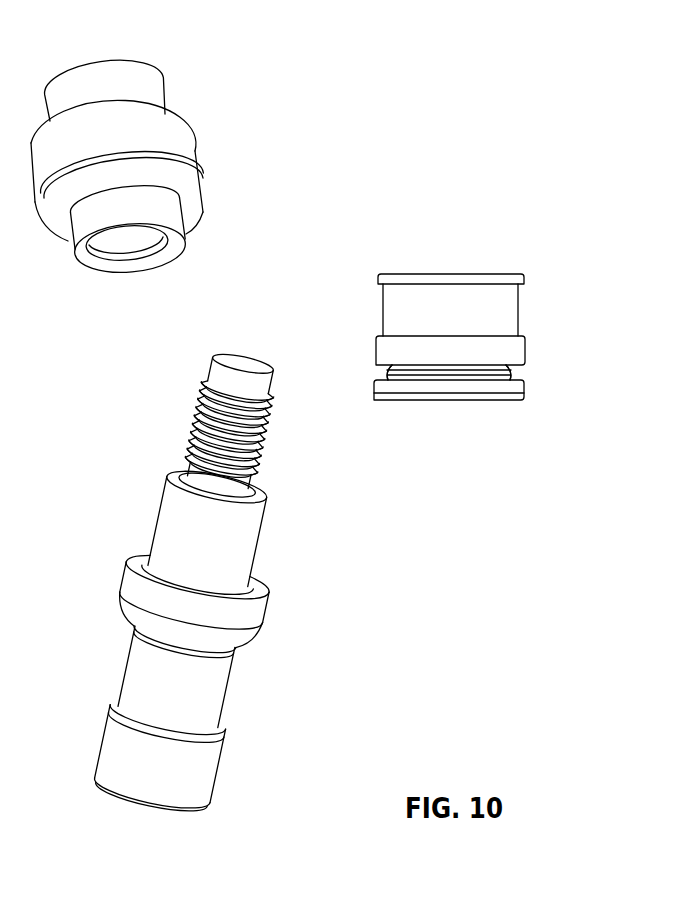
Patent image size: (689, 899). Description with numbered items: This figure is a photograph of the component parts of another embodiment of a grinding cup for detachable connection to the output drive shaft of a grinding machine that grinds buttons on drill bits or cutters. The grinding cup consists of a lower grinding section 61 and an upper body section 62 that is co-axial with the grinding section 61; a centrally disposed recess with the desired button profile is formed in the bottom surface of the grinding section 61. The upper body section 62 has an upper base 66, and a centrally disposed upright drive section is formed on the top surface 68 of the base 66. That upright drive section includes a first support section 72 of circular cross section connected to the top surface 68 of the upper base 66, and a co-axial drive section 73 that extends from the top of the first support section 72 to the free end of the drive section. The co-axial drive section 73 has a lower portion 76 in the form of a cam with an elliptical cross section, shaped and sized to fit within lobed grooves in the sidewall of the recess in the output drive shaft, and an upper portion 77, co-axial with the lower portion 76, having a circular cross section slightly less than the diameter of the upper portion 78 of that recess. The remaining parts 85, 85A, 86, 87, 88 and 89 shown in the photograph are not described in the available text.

The lower grinding section 61 is at (205, 777).
The upper body section 62 is at (215, 686).
The upper base 66 is at (138, 590).
The top surface 68 is at (262, 592).
The first support section 72 is at (203, 583).
The co-axial drive section 73 is at (188, 179).
The lower portion 76 is at (184, 158).
The upper portion 77 is at (145, 80).
The upper portion of the recess 78 is at (158, 250).
The neck 85 is at (185, 524).
The neck end face 85A is at (265, 492).
The threaded portion 86 is at (200, 408).
The insert 87 is at (395, 299).
The insert sidewall 88 is at (510, 308).
The insert groove 89 is at (503, 380).